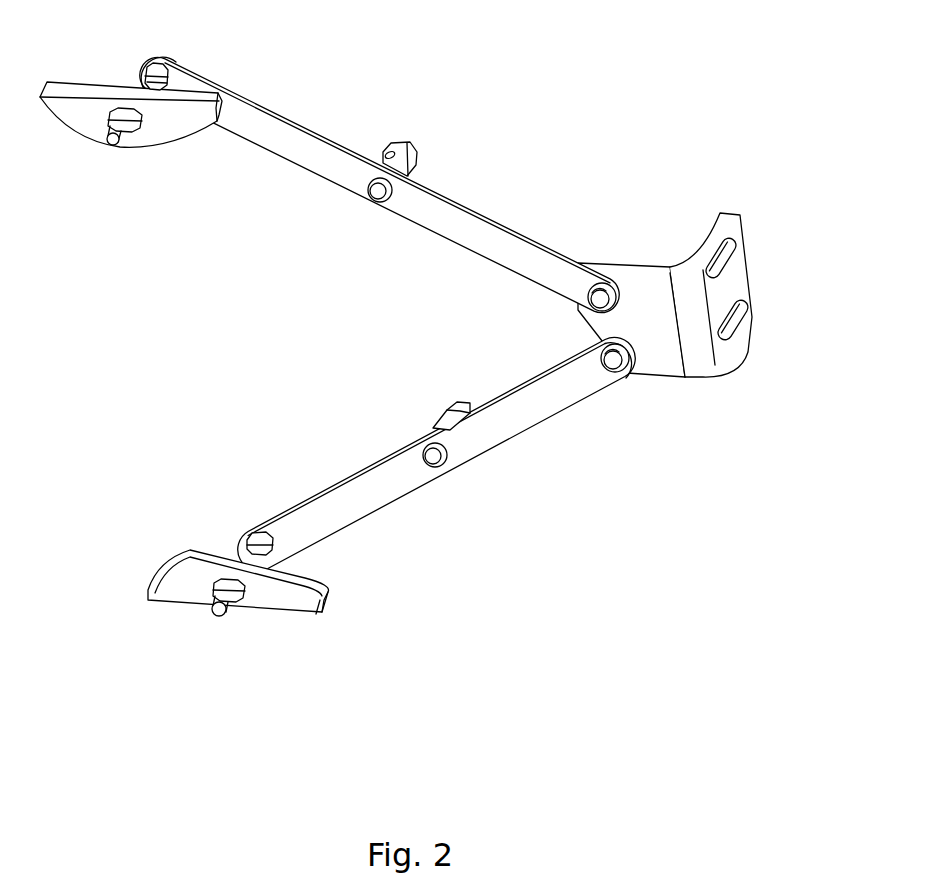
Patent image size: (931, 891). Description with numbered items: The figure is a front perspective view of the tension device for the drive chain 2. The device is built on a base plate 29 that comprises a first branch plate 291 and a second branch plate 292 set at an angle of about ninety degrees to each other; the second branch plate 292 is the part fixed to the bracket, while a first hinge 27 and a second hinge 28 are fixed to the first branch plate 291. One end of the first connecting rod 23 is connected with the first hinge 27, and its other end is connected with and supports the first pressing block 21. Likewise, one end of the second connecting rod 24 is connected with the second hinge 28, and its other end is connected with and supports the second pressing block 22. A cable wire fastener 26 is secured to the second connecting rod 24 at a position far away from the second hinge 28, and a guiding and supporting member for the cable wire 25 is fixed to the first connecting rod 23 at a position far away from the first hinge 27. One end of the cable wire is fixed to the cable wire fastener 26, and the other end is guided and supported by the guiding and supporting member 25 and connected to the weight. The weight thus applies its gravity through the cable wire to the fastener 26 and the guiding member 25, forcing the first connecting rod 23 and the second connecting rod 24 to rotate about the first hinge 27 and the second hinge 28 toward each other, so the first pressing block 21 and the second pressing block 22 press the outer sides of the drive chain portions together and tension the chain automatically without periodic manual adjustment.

The tension device for the drive chain 2 is at (453, 507).
The first pressing block 21 is at (100, 127).
The second pressing block 22 is at (182, 585).
The first connecting rod 23 is at (443, 215).
The second connecting rod 24 is at (497, 428).
The guiding and supporting member for the cable wire 25 is at (400, 150).
The cable wire fastener 26 is at (447, 412).
The first hinge 27 is at (607, 287).
The second hinge 28 is at (615, 372).
The base plate 29 is at (700, 360).
The first branch plate 291 is at (742, 275).
The second branch plate 292 is at (593, 327).